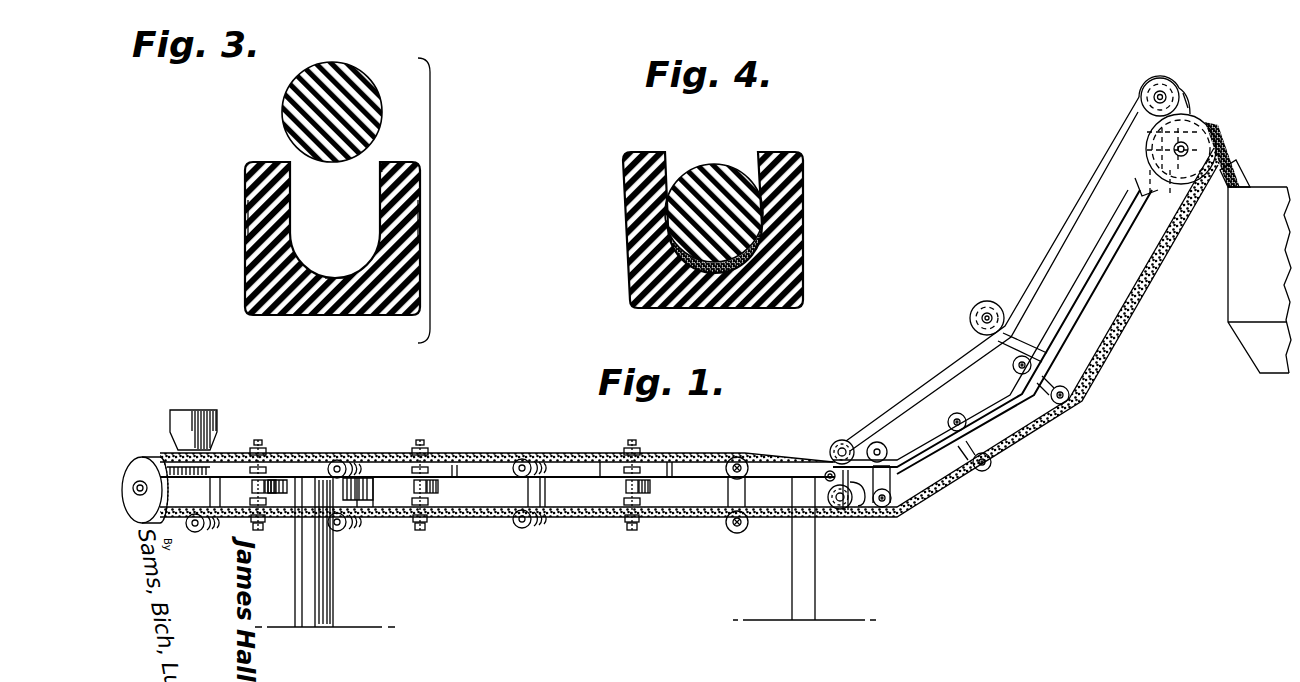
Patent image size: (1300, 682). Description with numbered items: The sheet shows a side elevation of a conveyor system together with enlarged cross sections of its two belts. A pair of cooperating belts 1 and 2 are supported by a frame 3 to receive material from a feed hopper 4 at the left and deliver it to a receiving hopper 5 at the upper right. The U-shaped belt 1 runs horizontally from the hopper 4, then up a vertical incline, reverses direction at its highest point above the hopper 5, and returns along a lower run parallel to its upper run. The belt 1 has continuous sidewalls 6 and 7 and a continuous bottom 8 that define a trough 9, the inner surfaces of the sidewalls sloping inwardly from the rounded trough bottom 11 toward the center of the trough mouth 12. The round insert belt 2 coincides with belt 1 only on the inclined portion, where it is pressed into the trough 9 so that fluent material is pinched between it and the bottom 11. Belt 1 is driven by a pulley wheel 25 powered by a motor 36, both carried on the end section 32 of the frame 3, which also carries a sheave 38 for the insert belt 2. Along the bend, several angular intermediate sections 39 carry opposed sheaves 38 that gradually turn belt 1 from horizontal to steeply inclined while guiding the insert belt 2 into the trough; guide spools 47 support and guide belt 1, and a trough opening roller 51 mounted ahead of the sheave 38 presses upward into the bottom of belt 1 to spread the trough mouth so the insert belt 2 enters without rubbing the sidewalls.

In FIG. 3, the U-shaped belt 1 is at (255, 316).
In FIG. 4, the U-shaped belt 1 is at (793, 238).
In FIG. 1, the U-shaped belt 1 is at (768, 453).
In FIG. 3, the insert belt 2 is at (362, 92).
In FIG. 4, the insert belt 2 is at (716, 168).
In FIG. 1, the insert belt 2 is at (892, 402).
In FIG. 1, the frame 3 is at (561, 498).
In FIG. 1, the feed hopper 4 is at (216, 426).
In FIG. 1, the receiving hopper 5 is at (1268, 187).
In FIG. 3, the sidewall 6 is at (256, 227).
In FIG. 3, the sidewall 7 is at (384, 212).
In FIG. 3, the bottom 8 is at (340, 306).
In FIG. 3, the trough 9 is at (337, 237).
In FIG. 3, the trough bottom 11 is at (336, 276).
In FIG. 3, the trough mouth 12 is at (357, 166).
In FIG. 1, the pulley wheel 25 is at (138, 470).
In FIG. 1, the end section 32 is at (1189, 106).
In FIG. 1, the motor 36 is at (1157, 195).
In FIG. 1, the sheave 38 is at (834, 447).
In FIG. 1, the intermediate section 39 is at (864, 502).
In FIG. 1, the guide spool 47 is at (343, 461).
In FIG. 1, the trough opening roller 51 is at (825, 481).